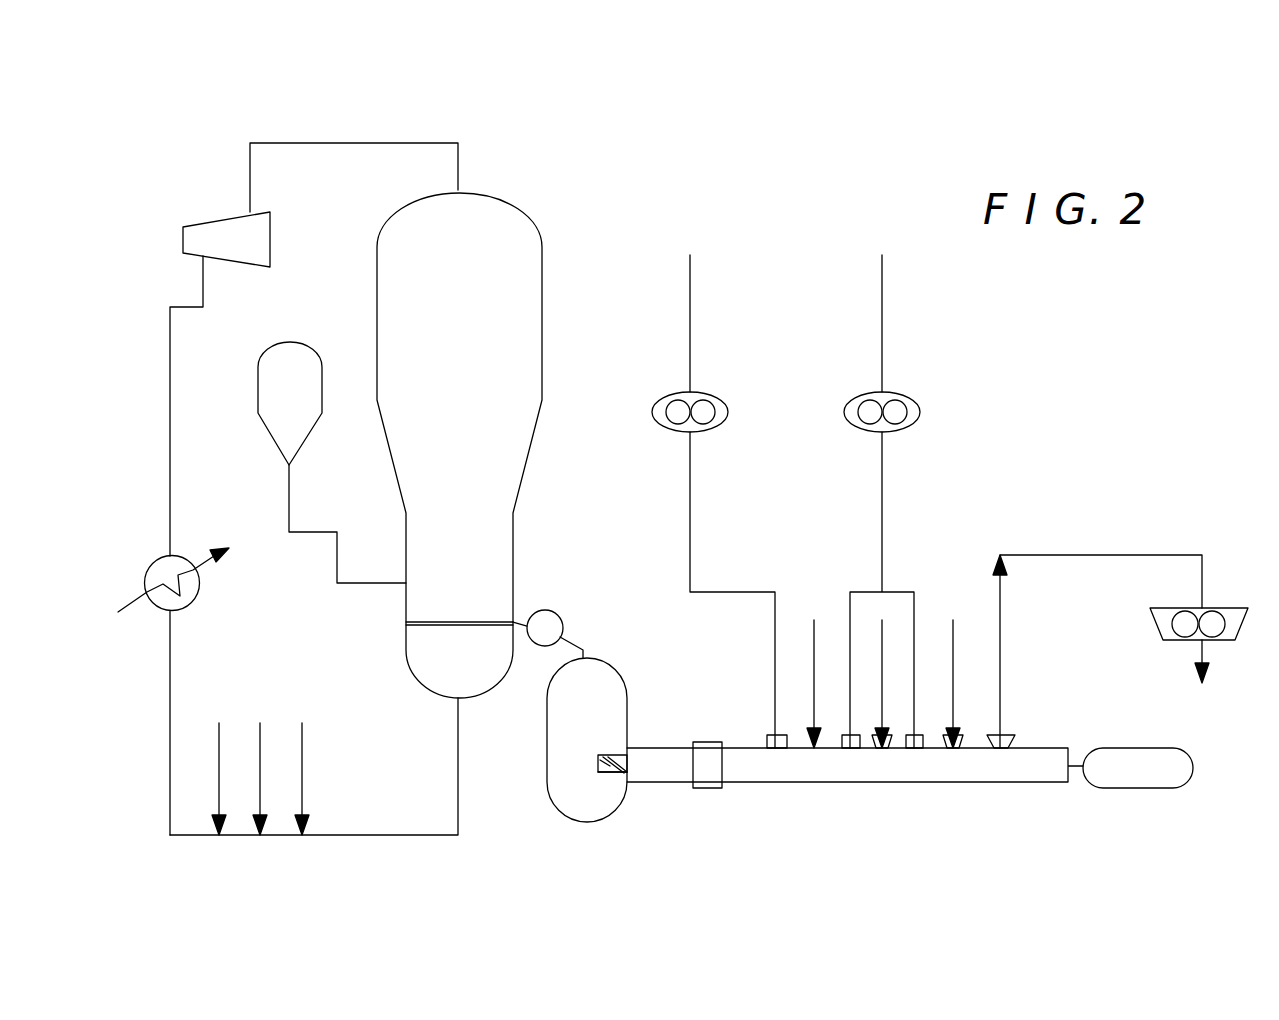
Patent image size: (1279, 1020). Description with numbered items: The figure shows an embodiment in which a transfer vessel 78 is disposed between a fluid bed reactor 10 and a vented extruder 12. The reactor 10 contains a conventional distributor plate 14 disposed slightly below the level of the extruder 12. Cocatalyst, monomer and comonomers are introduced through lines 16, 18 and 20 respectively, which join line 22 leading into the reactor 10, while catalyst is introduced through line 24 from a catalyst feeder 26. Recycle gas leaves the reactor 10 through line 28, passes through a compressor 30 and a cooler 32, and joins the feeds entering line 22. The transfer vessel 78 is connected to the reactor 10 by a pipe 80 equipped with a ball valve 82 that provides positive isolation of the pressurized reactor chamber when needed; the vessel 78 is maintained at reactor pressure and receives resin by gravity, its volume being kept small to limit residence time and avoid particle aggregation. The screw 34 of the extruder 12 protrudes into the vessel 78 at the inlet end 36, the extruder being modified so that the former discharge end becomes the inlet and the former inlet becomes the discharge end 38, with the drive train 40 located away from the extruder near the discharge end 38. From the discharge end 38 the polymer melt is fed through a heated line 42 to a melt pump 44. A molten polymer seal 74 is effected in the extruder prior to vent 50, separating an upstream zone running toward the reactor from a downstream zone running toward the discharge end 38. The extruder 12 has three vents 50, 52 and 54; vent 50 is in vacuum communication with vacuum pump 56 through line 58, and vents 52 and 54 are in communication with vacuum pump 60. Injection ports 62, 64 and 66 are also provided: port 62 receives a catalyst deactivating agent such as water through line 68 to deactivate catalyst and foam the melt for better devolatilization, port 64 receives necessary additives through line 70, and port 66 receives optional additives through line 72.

The fluid bed reactor 10 is at (543, 344).
The extruder 12 is at (654, 748).
The distributor plate 14 is at (431, 620).
The cocatalyst line 16 is at (216, 790).
The monomer line 18 is at (259, 738).
The comonomer line 20 is at (303, 766).
The feed line 22 is at (360, 835).
The catalyst line 24 is at (340, 560).
The catalyst feeder 26 is at (258, 390).
The recycle gas line 28 is at (357, 143).
The compressor 30 is at (207, 218).
The cooler 32 is at (178, 556).
The screw 34 is at (618, 756).
The inlet end 36 is at (627, 781).
The discharge end 38 is at (1008, 742).
The drive train 40 is at (1140, 748).
The heated conduit line 42 is at (1060, 555).
The melt pump 44 is at (1223, 608).
The first vent 50 is at (770, 742).
The second vent 52 is at (845, 738).
The third vent 54 is at (918, 735).
The vacuum pump 56 is at (712, 398).
The vacuum line 58 is at (691, 490).
The vacuum pump 60 is at (910, 398).
The injection port 62 is at (812, 742).
The injection port 64 is at (893, 740).
The injection port 66 is at (960, 742).
The deactivating agent line 68 is at (813, 670).
The additive line 70 is at (883, 661).
The optional additive line 72 is at (954, 670).
The seal 74 is at (716, 786).
The transfer vessel 78 is at (627, 696).
The pipe 80 is at (583, 650).
The ball valve 82 is at (560, 614).